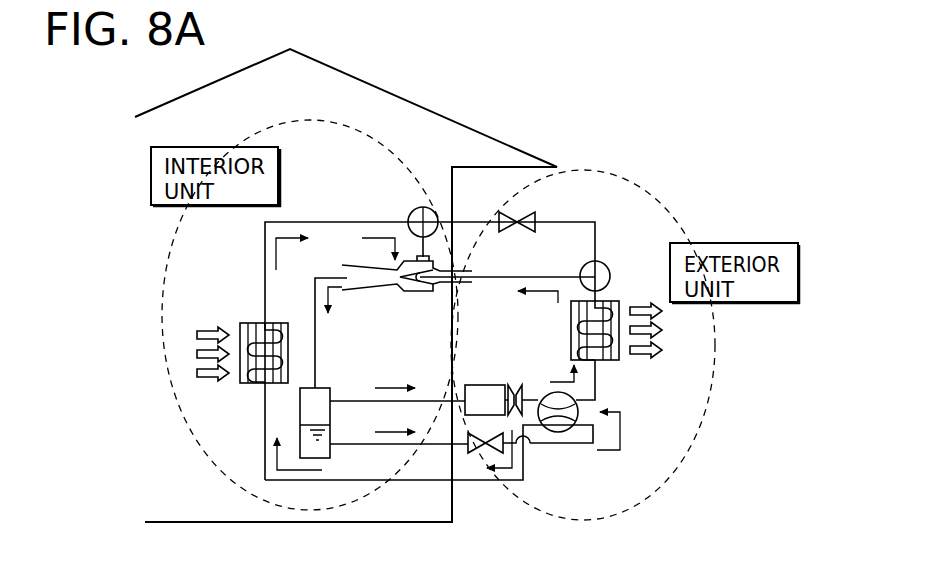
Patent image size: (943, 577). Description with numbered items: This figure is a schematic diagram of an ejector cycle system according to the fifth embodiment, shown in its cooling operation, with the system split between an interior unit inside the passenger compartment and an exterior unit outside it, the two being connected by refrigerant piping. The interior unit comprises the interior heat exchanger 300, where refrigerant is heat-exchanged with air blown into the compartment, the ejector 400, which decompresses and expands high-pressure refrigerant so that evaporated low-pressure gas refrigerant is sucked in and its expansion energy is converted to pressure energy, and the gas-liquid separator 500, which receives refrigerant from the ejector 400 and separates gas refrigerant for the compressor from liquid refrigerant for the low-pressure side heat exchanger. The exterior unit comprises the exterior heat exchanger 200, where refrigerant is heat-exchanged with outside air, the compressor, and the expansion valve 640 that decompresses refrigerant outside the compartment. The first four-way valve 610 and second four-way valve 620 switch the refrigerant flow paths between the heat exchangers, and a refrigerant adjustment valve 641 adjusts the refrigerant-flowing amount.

The exterior heat exchanger 200 is at (614, 362).
The interior heat exchanger 300 is at (254, 324).
The ejector 400 is at (373, 268).
The gas-liquid separator 500 is at (328, 459).
The first four-way valve 610 is at (557, 445).
The second four-way valve 620 is at (423, 206).
The expansion valve 640 is at (527, 212).
The refrigerant adjustment valve 641 is at (470, 453).